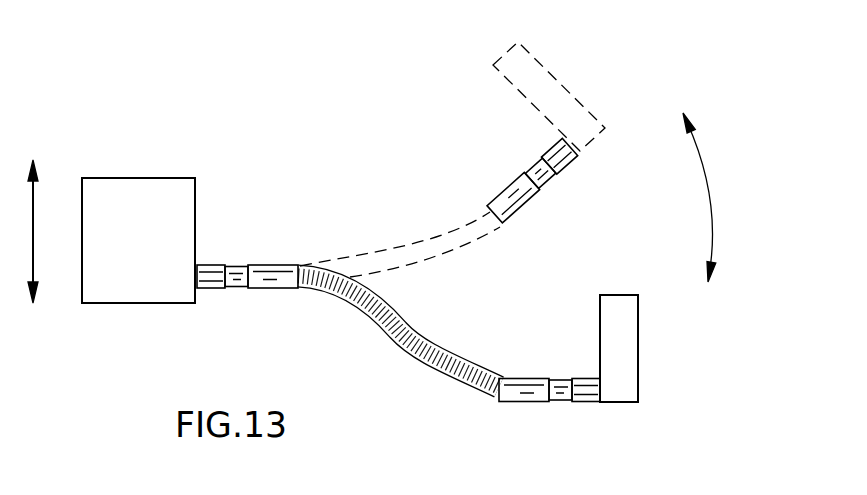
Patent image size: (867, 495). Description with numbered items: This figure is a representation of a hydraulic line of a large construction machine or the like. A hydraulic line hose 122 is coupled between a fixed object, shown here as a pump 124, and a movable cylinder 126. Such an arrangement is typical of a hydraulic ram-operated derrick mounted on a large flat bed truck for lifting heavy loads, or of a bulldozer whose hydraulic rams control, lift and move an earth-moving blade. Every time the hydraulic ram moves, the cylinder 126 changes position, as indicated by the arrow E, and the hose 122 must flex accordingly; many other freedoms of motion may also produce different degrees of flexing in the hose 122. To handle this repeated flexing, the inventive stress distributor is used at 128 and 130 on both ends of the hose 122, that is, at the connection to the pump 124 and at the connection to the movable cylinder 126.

The hydraulic line hose 122 is at (433, 347).
The pump 124 is at (197, 198).
The movable cylinder 126 is at (563, 83).
The stress distributor 128 is at (278, 263).
The stress distributor 130 is at (526, 208).
The arrow E is at (710, 200).